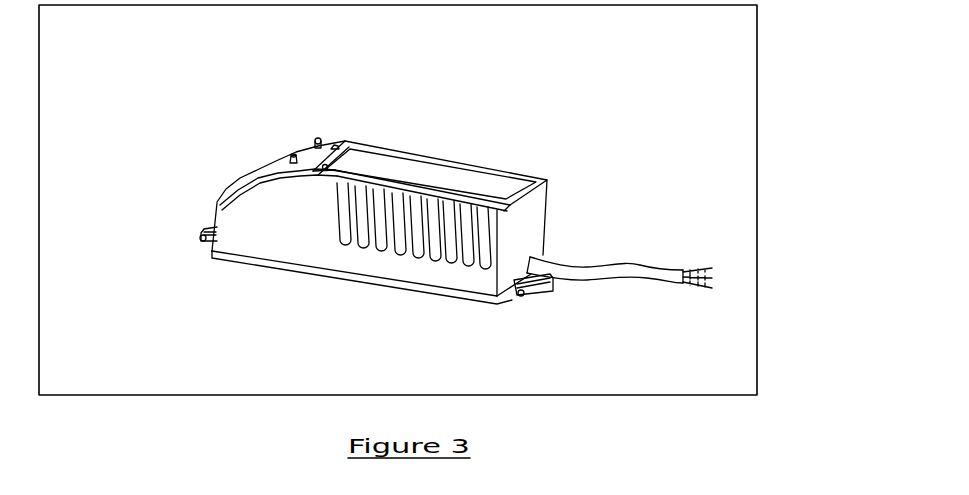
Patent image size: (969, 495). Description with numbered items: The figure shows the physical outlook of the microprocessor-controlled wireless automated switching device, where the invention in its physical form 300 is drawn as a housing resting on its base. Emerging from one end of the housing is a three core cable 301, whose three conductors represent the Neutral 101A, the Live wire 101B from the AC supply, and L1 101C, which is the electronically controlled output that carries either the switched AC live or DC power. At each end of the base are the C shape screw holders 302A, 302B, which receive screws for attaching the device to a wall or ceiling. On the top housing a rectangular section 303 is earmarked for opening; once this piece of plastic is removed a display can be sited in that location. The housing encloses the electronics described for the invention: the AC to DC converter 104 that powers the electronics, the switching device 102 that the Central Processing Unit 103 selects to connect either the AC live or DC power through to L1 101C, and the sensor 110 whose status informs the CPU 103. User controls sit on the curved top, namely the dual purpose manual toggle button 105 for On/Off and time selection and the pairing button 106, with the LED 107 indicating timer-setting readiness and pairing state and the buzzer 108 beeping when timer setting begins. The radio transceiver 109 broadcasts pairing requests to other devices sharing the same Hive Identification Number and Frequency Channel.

The invention in its physical form 300 is at (459, 200).
The 3 core cable 301 is at (605, 209).
The Neutral 101A is at (706, 194).
The Live wire 101B is at (706, 207).
The L1 101C is at (706, 221).
The C shape screw holder 302A is at (583, 322).
The C shape screw holder 302B is at (138, 269).
The switching device 102 is at (362, 310).
The Central Processing Unit 103 is at (371, 249).
The AC to DC converter 104 is at (273, 234).
The manual toggle button 105 is at (231, 133).
The pairing button 106 is at (275, 92).
The LED 107 is at (360, 91).
The buzzer 108 is at (387, 106).
The radio transceiver 109 is at (474, 112).
The sensor 110 is at (590, 158).
The rectangular section of the top housing 303 is at (432, 116).